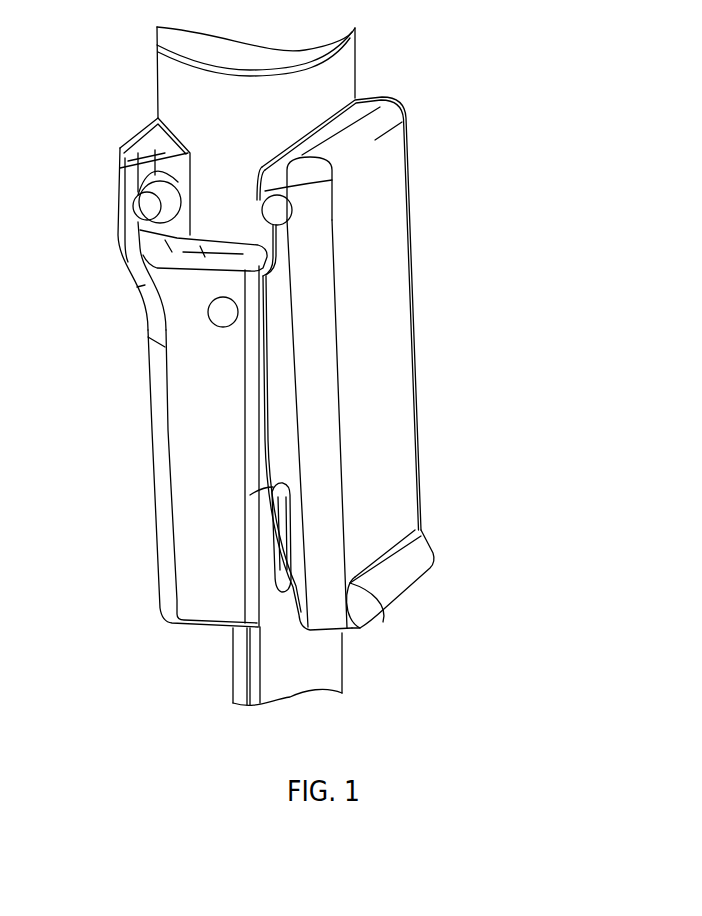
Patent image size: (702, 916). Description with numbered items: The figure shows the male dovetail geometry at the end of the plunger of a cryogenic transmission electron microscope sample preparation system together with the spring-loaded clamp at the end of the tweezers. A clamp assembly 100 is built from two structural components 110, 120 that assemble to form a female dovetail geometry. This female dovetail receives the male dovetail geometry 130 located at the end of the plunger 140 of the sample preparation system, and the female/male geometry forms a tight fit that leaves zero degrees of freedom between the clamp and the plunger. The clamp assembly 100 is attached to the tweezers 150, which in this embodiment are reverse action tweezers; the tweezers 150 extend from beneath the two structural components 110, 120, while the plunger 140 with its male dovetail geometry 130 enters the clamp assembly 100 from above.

The clamp assembly 100 is at (477, 83).
The structural component 110 is at (196, 405).
The structural component 120 is at (402, 368).
The male dovetail geometry 130 is at (232, 212).
The plunger 140 is at (268, 85).
The tweezers 150 is at (305, 680).